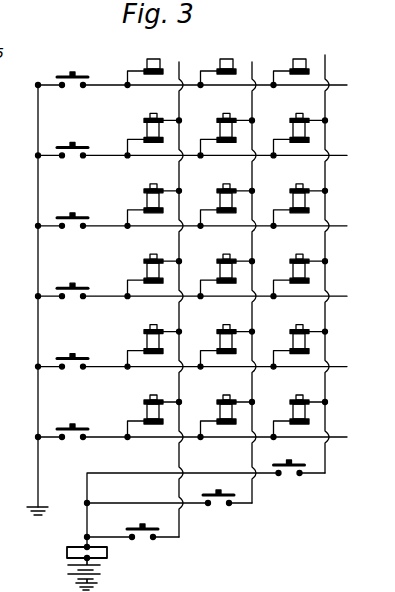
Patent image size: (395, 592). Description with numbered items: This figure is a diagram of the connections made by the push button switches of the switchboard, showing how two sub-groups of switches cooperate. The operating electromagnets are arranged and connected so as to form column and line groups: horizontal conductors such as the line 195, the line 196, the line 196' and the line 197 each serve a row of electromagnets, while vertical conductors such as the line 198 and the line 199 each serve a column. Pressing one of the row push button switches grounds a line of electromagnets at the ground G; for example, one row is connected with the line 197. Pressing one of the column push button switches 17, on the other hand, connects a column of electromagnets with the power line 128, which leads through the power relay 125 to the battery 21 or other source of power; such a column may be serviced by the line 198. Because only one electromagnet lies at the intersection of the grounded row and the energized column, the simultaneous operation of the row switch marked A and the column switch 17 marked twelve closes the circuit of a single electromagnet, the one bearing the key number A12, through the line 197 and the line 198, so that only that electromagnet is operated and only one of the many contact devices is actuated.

The line 195 is at (137, 88).
The line 196 is at (144, 166).
The line 196' is at (299, 167).
The line 197 is at (113, 227).
The line 198 is at (180, 179).
The line 199 is at (253, 180).
The key number A12 is at (193, 196).
The push button switch 17 is at (218, 507).
The power line 128 is at (83, 517).
The power relay 125 is at (66, 553).
The battery 21 is at (80, 574).
The ground G is at (41, 503).